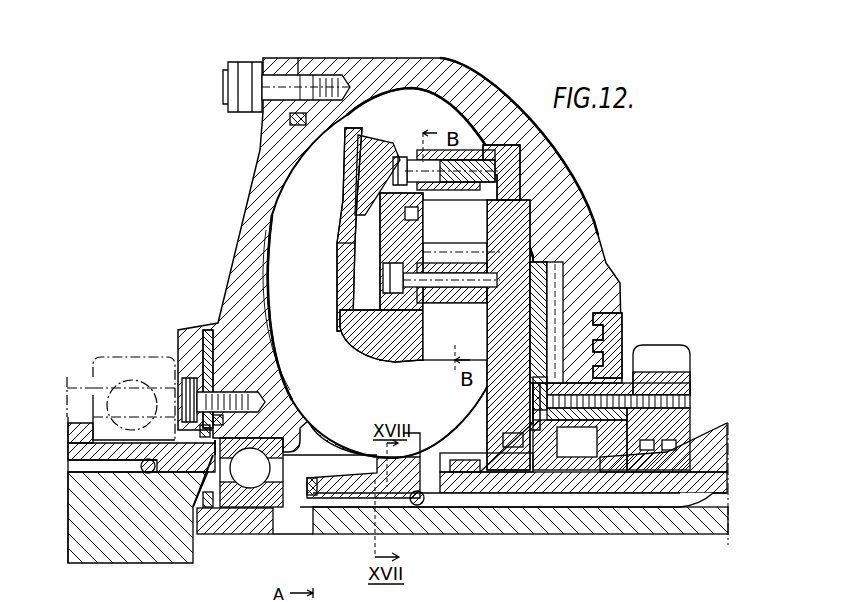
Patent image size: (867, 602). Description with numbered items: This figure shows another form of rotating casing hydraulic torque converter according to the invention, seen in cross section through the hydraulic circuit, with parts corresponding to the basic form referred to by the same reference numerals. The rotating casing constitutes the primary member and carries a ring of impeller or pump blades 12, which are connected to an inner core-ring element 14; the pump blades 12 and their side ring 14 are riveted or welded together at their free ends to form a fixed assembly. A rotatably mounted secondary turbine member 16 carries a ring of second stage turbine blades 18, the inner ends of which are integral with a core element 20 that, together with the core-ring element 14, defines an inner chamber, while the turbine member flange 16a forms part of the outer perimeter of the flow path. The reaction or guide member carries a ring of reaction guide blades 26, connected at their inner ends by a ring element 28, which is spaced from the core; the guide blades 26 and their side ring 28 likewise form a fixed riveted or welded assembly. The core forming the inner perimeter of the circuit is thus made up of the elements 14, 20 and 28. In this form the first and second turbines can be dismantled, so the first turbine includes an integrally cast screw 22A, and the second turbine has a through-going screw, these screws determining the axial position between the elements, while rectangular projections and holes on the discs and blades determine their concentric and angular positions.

The pump blades 12 is at (319, 263).
The core-ring element 14 is at (340, 290).
The secondary turbine member 16 is at (640, 528).
The turbine member flange 16a is at (403, 455).
The second stage turbine blades 18 is at (460, 340).
The core element 20 is at (385, 346).
The integrally cast screw 22A is at (465, 158).
The reaction guide blades 26 is at (460, 228).
The ring element 28 is at (420, 237).